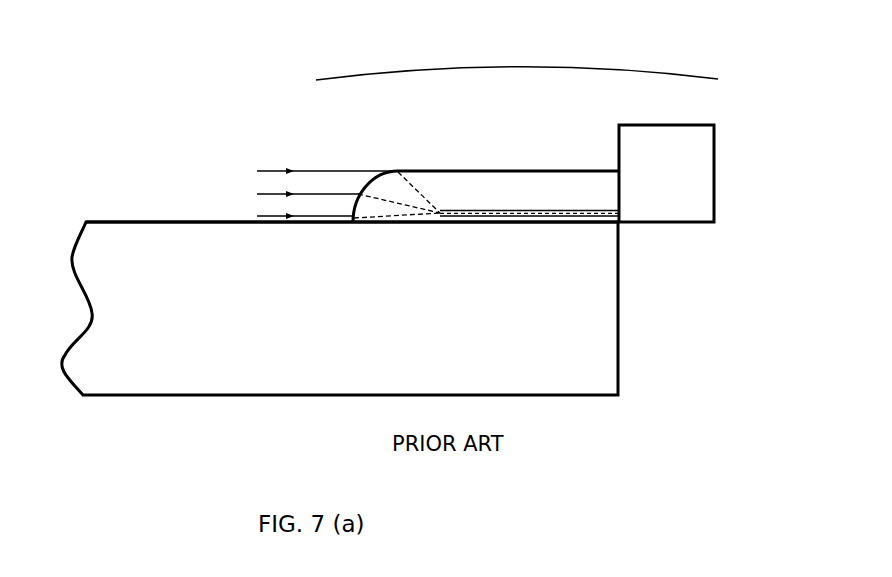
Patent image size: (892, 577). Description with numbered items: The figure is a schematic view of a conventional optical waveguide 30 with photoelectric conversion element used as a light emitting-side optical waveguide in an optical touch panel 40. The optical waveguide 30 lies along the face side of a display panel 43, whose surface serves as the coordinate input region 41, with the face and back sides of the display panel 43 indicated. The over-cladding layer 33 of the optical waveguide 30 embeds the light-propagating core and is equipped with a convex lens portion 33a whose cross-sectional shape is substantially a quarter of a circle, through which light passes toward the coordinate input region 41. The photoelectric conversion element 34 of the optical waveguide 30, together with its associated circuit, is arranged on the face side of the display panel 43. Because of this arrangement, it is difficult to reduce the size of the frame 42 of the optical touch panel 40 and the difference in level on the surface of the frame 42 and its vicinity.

The optical touch panel 40 is at (130, 106).
The coordinate input region 41 is at (223, 222).
The frame 42 is at (517, 57).
The display panel 43 is at (292, 345).
The over-cladding layer 33 is at (482, 188).
The convex lens portion 33a is at (370, 180).
The optical waveguide with photoelectric conversion element 30 is at (566, 171).
The photoelectric conversion element 34 is at (682, 177).